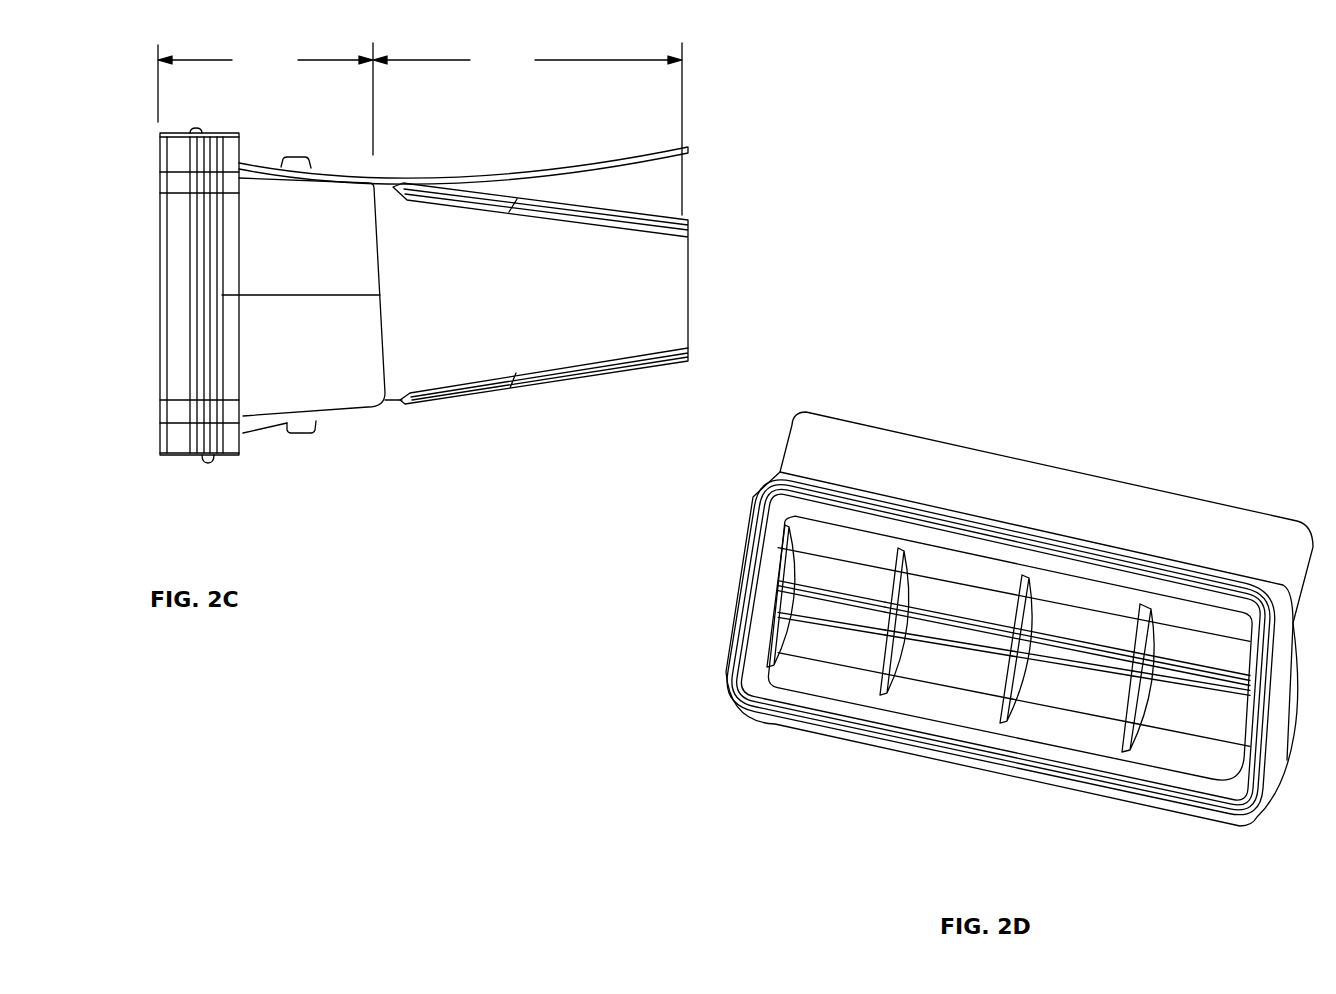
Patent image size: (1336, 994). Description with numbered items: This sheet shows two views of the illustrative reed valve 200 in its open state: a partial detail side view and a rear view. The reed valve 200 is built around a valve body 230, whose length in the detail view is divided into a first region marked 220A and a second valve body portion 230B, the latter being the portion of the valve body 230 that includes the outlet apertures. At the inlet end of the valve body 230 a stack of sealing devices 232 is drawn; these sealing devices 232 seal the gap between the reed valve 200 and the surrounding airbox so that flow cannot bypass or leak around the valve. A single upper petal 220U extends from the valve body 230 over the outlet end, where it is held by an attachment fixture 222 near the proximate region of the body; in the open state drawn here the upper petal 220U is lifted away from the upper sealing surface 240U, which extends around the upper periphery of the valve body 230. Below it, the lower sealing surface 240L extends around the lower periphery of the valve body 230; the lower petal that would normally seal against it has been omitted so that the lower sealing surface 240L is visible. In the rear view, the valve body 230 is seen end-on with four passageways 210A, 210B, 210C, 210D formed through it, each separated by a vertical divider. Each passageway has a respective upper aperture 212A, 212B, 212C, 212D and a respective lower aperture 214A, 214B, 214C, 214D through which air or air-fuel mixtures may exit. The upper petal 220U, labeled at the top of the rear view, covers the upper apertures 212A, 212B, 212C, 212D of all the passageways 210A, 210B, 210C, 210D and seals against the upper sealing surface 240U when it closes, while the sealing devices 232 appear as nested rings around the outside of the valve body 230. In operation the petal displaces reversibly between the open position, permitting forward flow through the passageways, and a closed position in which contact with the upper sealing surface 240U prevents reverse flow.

In FIG. 2C, the reed valve 200 is at (1250, 38).
In FIG. 2C, the first section length of upper wall 220A is at (265, 99).
In FIG. 2C, the second valve body portion 230B is at (527, 129).
In FIG. 2C, the sealing device 232 is at (173, 158).
In FIG. 2D, the sealing device 232 is at (1262, 818).
In FIG. 2C, the valve body 230 is at (226, 130).
In FIG. 2C, the upper petal 220U is at (572, 168).
In FIG. 2D, the upper petal 220U is at (1068, 489).
In FIG. 2C, the upper sealing surface 240U is at (672, 222).
In FIG. 2C, the lower sealing surface 240L is at (485, 393).
In FIG. 2C, the attachment fixture 222 is at (307, 433).
In FIG. 2D, the passageway 210A is at (1200, 693).
In FIG. 2D, the passageway 210B is at (1080, 663).
In FIG. 2D, the passageway 210C is at (964, 640).
In FIG. 2D, the passageway 210D is at (827, 614).
In FIG. 2D, the upper aperture 212A is at (1191, 664).
In FIG. 2D, the upper aperture 212B is at (1072, 640).
In FIG. 2D, the upper aperture 212C is at (948, 615).
In FIG. 2D, the upper aperture 212D is at (831, 591).
In FIG. 2D, the lower aperture 214A is at (1191, 708).
In FIG. 2D, the lower aperture 214B is at (1072, 687).
In FIG. 2D, the lower aperture 214C is at (948, 664).
In FIG. 2D, the lower aperture 214D is at (831, 643).